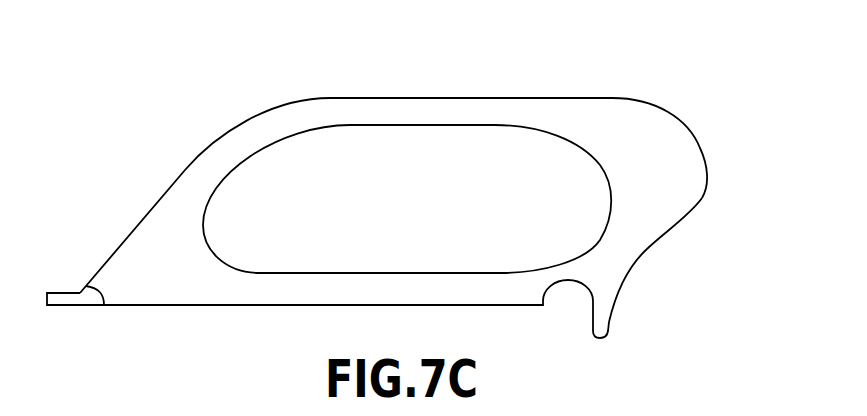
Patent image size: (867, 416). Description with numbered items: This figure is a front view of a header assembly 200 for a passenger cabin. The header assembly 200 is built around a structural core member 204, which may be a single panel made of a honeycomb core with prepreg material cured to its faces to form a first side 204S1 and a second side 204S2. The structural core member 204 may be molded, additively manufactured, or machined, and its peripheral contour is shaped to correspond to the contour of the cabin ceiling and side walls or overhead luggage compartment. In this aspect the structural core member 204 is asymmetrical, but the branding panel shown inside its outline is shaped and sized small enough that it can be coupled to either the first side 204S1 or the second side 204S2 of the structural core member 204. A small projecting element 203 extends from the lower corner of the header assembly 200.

The header assembly 200 is at (410, 54).
The tab 203 is at (65, 307).
The structural core member 204 is at (702, 196).
The first side of the structural core member 204S1 is at (630, 247).
The second side of the structural core member 204S2 is at (680, 125).